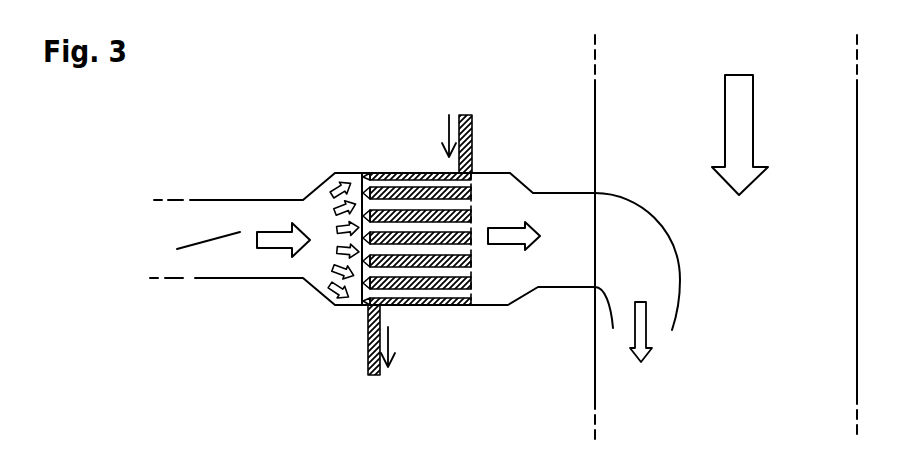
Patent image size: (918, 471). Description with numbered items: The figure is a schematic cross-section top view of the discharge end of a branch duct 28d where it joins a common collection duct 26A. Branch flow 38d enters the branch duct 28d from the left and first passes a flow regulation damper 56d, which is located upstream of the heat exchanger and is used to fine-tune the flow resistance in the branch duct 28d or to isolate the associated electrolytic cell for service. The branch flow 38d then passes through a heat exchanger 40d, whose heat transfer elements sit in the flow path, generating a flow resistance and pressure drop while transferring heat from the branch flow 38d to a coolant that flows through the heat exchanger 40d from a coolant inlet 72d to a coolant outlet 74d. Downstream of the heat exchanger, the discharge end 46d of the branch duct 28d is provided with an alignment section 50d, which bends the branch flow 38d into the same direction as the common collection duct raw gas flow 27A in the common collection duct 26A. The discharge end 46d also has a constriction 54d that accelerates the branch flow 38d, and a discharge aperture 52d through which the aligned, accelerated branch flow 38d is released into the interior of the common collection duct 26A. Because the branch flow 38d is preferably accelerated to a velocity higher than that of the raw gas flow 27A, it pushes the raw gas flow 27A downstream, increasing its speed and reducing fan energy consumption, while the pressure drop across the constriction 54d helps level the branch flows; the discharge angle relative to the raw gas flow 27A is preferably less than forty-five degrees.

The branch duct 28d is at (263, 280).
The flow regulation damper 56d is at (208, 242).
The branch flow 38d is at (279, 238).
The heat exchanger 40d is at (409, 133).
The coolant inlet 72d is at (472, 125).
The coolant outlet 74d is at (368, 338).
The discharge end 46d is at (584, 111).
The common collection duct raw gas flow 27A is at (733, 127).
The common collection duct 26A is at (594, 360).
The alignment section 50d is at (643, 257).
The constriction 54d is at (675, 312).
The discharge aperture 52d is at (661, 362).